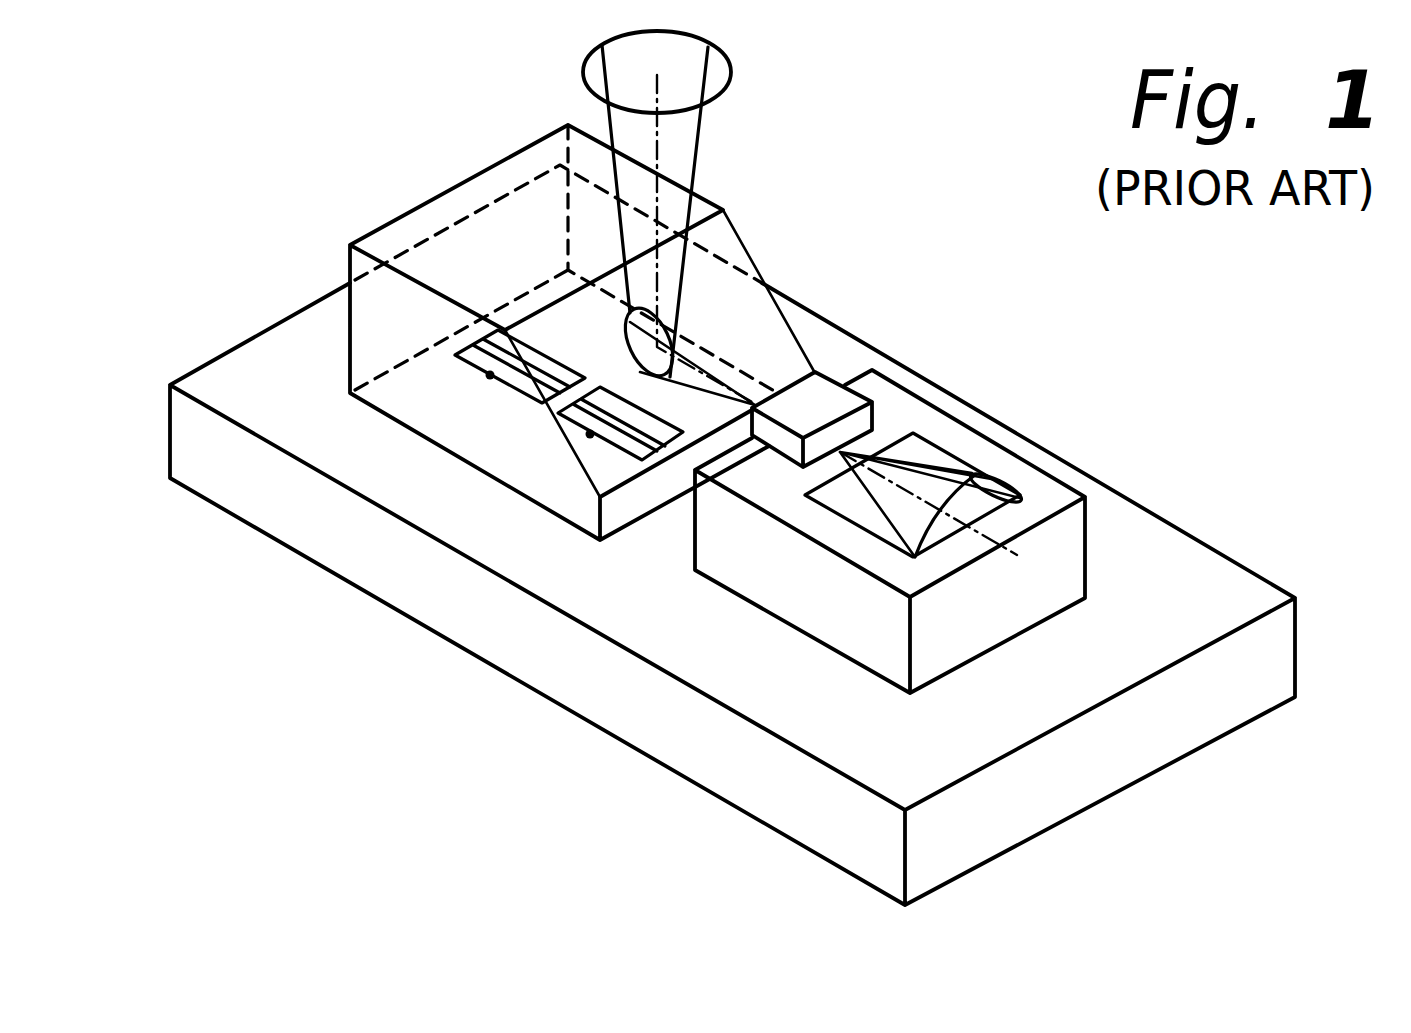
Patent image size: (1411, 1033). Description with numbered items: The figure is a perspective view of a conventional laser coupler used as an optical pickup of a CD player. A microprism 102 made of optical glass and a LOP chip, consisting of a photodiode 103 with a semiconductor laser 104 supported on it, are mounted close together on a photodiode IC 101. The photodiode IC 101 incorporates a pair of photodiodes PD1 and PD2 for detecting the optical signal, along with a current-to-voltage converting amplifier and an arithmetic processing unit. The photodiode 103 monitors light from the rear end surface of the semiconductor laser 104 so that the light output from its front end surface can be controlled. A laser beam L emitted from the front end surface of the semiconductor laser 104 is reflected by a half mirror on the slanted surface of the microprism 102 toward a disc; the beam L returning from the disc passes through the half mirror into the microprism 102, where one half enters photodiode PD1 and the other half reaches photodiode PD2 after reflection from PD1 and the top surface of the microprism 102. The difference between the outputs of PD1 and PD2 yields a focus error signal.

The photodiode IC 101 is at (528, 665).
The microprism 102 is at (415, 225).
The photodiode 103 is at (1045, 495).
The semiconductor laser 104 is at (823, 393).
The laser beam L is at (718, 352).
The photodiode PD1 is at (590, 434).
The photodiode PD2 is at (490, 375).